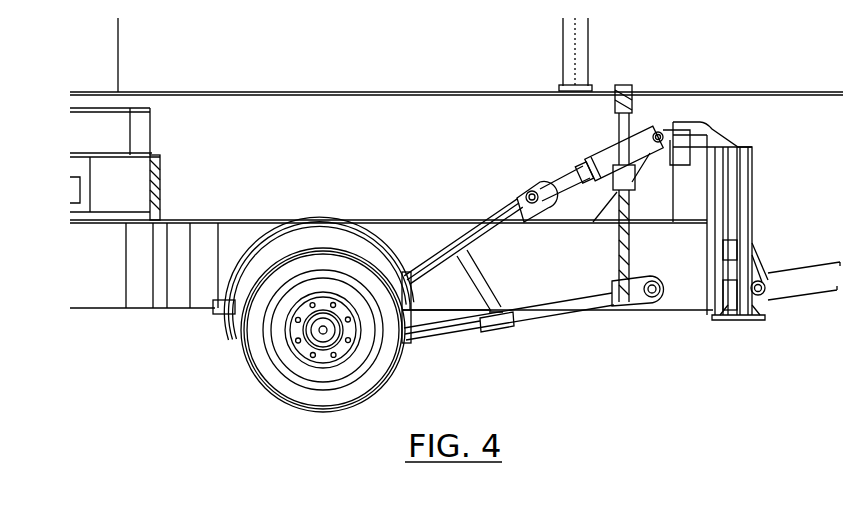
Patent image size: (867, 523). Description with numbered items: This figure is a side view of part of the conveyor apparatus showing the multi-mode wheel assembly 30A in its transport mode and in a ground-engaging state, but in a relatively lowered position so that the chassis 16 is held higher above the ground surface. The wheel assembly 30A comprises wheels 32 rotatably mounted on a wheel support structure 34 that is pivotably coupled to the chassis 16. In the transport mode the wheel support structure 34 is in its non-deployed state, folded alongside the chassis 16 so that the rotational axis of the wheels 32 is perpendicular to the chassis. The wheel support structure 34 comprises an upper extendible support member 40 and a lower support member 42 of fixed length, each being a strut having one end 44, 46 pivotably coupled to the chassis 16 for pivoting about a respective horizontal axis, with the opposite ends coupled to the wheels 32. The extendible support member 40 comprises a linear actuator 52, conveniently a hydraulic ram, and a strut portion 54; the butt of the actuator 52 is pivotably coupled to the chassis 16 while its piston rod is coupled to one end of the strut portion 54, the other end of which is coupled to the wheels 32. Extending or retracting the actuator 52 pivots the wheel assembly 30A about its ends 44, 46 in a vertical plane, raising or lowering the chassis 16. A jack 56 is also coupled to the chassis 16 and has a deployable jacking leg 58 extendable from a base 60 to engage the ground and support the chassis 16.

The chassis 16 is at (295, 155).
The wheel assembly 30A is at (453, 205).
The wheels 32 is at (265, 362).
The wheel support structure 34 is at (461, 332).
The extendible support member 40 is at (480, 218).
The lower support member 42 is at (542, 312).
The end of upper support member 44 is at (660, 131).
The end of lower support member 46 is at (639, 306).
The linear actuator 52 is at (593, 157).
The strut portion 54 is at (468, 237).
The jack 56 is at (752, 195).
The jacking leg 58 is at (734, 316).
The base 60 is at (753, 220).